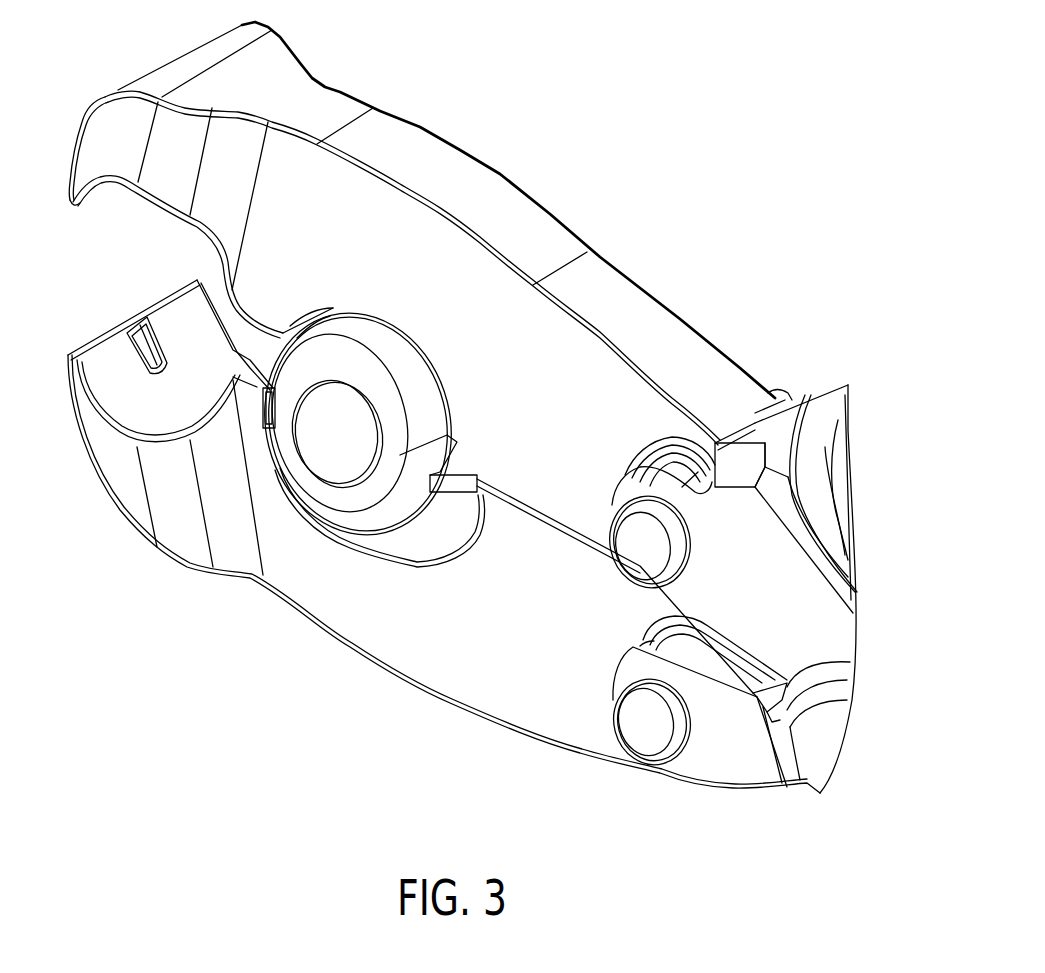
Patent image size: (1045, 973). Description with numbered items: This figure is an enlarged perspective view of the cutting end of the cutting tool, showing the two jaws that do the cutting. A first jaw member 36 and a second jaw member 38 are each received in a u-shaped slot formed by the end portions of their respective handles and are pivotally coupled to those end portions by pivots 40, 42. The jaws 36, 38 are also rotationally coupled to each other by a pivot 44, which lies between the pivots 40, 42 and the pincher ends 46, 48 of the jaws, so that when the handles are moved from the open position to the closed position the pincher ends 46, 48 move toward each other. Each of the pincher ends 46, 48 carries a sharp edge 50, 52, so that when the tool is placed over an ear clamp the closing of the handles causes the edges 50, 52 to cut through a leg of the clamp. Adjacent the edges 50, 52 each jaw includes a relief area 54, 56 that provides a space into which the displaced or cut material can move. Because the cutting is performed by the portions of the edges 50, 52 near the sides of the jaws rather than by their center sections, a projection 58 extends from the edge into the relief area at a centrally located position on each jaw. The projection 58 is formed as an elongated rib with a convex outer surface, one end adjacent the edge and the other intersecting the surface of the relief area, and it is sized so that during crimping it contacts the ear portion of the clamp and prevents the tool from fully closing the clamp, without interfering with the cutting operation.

The first jaw member 36 is at (353, 627).
The second jaw member 38 is at (457, 170).
The pivot 40 is at (643, 733).
The pivot 42 is at (637, 543).
The pivot 44 is at (320, 428).
The pincher end 46 is at (103, 447).
The pincher end 48 is at (107, 130).
The edge 50 is at (77, 353).
The edge 52 is at (80, 203).
The relief area 54 is at (133, 423).
The relief area 56 is at (187, 207).
The projection 58 is at (143, 330).